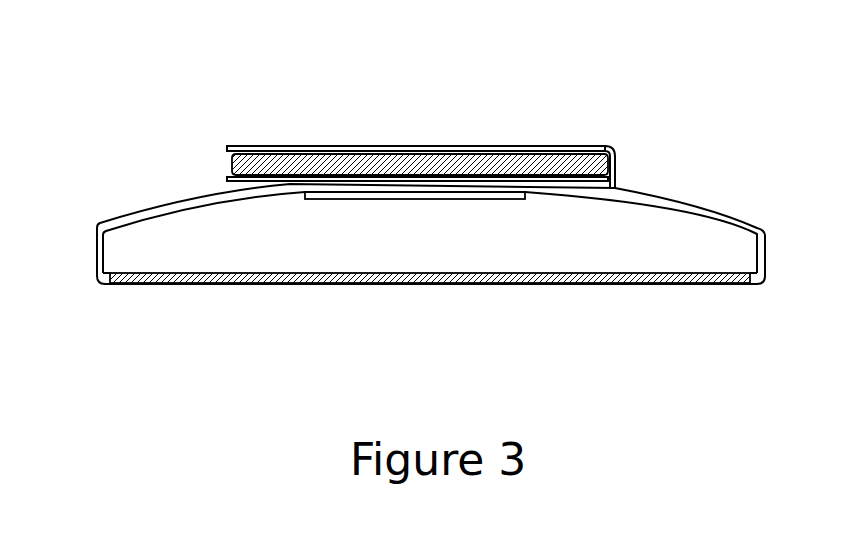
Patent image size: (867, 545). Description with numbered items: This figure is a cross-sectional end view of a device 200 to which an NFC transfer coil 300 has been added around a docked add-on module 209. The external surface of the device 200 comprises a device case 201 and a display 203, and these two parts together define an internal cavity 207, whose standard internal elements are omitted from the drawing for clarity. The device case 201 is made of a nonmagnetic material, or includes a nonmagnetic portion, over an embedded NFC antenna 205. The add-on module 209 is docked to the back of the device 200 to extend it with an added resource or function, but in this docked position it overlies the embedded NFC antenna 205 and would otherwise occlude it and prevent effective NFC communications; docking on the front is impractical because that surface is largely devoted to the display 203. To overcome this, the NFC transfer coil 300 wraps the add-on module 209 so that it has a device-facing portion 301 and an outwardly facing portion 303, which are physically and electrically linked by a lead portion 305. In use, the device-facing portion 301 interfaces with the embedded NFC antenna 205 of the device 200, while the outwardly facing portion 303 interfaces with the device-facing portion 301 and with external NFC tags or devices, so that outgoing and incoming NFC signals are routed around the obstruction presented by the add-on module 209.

The device 200 is at (523, 67).
The device case 201 is at (98, 247).
The display 203 is at (168, 284).
The embedded NFC antenna 205 is at (373, 199).
The internal cavity 207 is at (515, 246).
The add-on module 209 is at (231, 165).
The NFC transfer coil 300 is at (391, 134).
The device-facing portion 301 is at (283, 183).
The outwardly facing portion 303 is at (275, 146).
The lead portion 305 is at (615, 160).